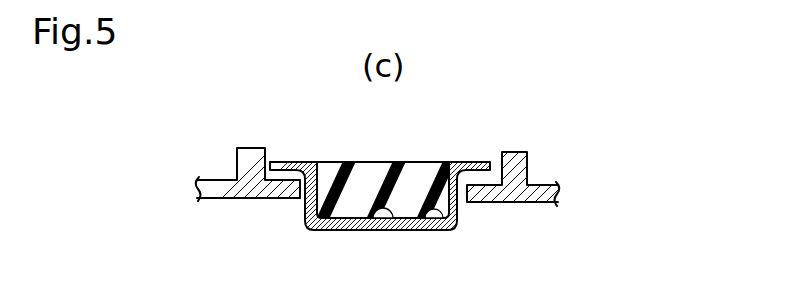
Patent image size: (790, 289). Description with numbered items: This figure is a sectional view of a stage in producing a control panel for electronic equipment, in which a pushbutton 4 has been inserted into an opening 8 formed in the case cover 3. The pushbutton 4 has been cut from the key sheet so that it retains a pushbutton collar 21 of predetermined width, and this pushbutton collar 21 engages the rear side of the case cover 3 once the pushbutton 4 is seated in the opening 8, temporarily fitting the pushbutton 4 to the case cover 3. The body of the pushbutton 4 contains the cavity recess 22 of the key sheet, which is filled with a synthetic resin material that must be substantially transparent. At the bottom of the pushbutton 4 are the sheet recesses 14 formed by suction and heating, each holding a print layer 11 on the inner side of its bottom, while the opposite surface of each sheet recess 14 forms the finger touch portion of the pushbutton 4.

The case cover 3 is at (548, 190).
The pushbutton 4 is at (440, 144).
The opening 8 is at (300, 197).
The print layer 11 is at (370, 222).
The sheet recess 14 is at (435, 222).
The pushbutton collar 21 is at (478, 160).
The cavity recess 22 is at (372, 160).